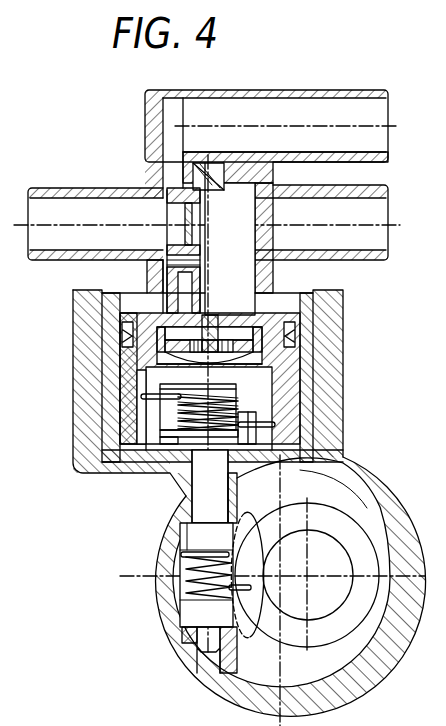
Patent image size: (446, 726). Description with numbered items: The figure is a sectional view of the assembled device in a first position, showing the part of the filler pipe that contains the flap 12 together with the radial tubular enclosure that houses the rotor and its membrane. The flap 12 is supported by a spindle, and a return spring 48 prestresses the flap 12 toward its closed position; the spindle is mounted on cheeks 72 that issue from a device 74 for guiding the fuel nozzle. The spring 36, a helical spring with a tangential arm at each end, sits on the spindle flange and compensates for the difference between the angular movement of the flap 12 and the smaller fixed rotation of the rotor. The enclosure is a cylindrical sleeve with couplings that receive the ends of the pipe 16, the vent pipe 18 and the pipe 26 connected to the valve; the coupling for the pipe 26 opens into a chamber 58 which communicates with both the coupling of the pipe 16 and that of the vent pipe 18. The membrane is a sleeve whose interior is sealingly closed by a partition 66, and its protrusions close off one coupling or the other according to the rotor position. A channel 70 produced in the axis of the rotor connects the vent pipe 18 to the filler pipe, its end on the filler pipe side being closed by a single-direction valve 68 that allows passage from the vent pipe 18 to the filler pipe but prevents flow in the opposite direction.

The pipe 26 is at (370, 90).
The vent pipe 18 is at (63, 188).
The pipe 16 is at (372, 259).
The chamber 58 is at (233, 232).
The partition 66 is at (185, 218).
The channel 70 is at (188, 318).
The single-direction valve 68 is at (214, 341).
The spring 36 is at (247, 399).
The flap 12 is at (257, 545).
The return spring 48 is at (185, 576).
The cheeks 72 is at (232, 664).
The device for guiding the nozzle 74 is at (317, 632).